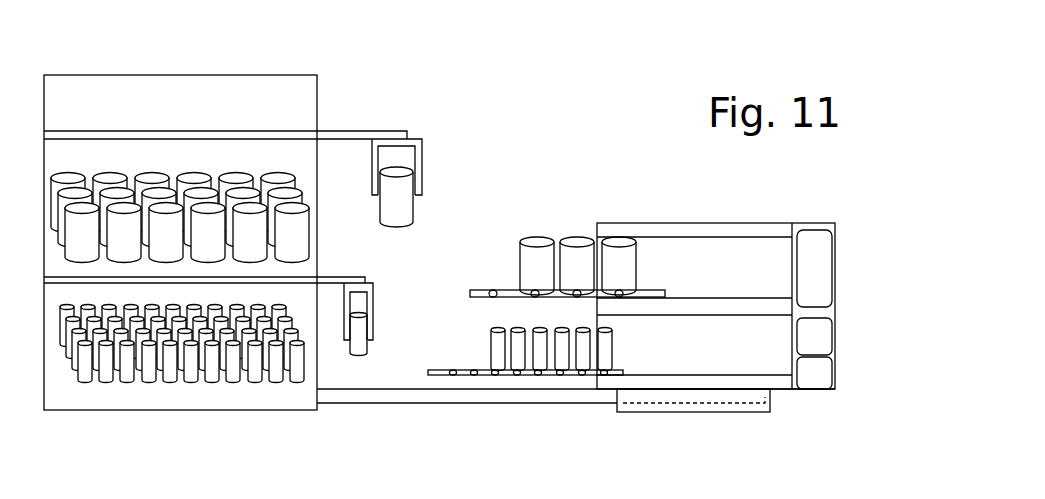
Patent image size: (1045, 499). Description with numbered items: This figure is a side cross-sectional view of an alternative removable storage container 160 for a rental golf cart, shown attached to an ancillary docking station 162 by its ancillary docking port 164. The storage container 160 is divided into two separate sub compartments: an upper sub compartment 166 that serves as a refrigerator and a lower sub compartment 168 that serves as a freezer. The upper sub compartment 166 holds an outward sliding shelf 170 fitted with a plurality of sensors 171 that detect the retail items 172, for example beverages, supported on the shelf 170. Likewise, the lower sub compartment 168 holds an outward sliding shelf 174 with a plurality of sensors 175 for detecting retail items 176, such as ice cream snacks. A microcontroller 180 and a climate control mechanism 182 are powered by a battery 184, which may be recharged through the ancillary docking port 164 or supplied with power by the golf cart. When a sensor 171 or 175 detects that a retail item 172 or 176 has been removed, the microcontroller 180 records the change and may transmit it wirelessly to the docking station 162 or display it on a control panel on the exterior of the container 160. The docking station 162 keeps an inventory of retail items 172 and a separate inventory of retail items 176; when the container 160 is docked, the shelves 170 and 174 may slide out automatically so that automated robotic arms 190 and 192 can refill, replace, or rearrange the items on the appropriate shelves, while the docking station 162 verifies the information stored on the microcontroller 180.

The storage container 160 is at (836, 195).
The ancillary docking station 162 is at (180, 242).
The ancillary docking port 164 is at (727, 412).
The upper sub compartment 166 is at (694, 267).
The lower sub compartment 168 is at (694, 345).
The outward sliding shelf 170 is at (657, 289).
The sensors 171 is at (590, 303).
The retail items 172 is at (582, 258).
The outward sliding shelf 174 is at (433, 378).
The sensors 175 is at (453, 378).
The retail items 176 is at (518, 340).
The microcontroller 180 is at (828, 334).
The climate control mechanism 182 is at (820, 283).
The battery 184 is at (820, 376).
The automated robotic arm 190 is at (373, 131).
The automated robotic arm 192 is at (370, 277).